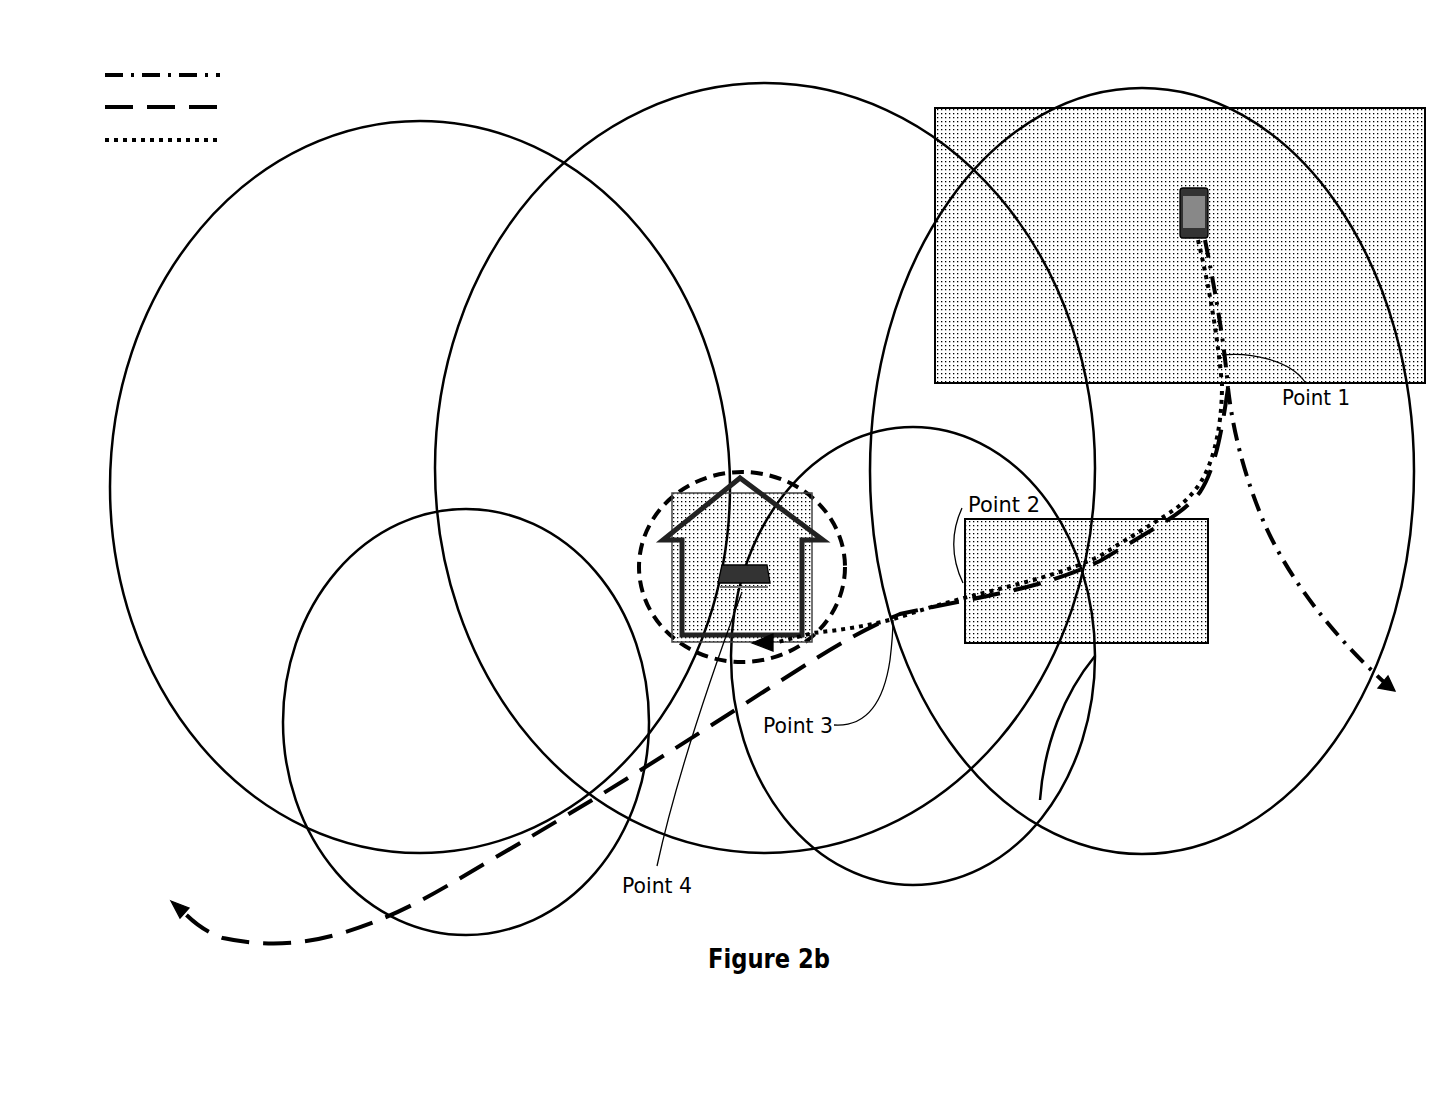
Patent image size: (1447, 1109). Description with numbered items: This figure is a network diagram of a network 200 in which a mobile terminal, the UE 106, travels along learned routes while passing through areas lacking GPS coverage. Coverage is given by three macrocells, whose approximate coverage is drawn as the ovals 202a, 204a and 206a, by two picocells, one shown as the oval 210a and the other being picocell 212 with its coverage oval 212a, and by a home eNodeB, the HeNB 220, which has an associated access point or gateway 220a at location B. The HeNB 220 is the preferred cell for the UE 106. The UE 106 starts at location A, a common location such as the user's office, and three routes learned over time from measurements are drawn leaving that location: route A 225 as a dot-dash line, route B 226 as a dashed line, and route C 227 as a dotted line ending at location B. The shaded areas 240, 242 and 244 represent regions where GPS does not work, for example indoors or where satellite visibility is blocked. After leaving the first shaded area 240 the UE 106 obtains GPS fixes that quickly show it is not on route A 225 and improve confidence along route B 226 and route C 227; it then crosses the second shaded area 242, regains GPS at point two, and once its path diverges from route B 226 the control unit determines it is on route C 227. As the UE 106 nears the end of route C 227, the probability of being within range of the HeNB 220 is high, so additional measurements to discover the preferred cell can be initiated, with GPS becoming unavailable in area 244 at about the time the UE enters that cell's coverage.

The UE 106 is at (1183, 240).
The network 200 is at (739, 490).
The coverage area of macrocell 202 202a is at (473, 123).
The coverage area of macrocell 204 204a is at (655, 95).
The coverage area of macrocell 206 206a is at (1112, 88).
The coverage area of picocell 210 210a is at (337, 562).
The picocell 212 is at (836, 440).
The coverage area of picocell 212 212a is at (1098, 722).
The home eNodeB (HeNB) 220 is at (672, 487).
The access point or gateway 220a is at (715, 565).
The route A 225 is at (1400, 697).
The route B 226 is at (357, 938).
The route C 227 is at (1168, 493).
The shaded area without GPS 240 is at (1328, 100).
The shaded area without GPS 242 is at (1215, 638).
The shaded area without GPS 244 is at (813, 547).